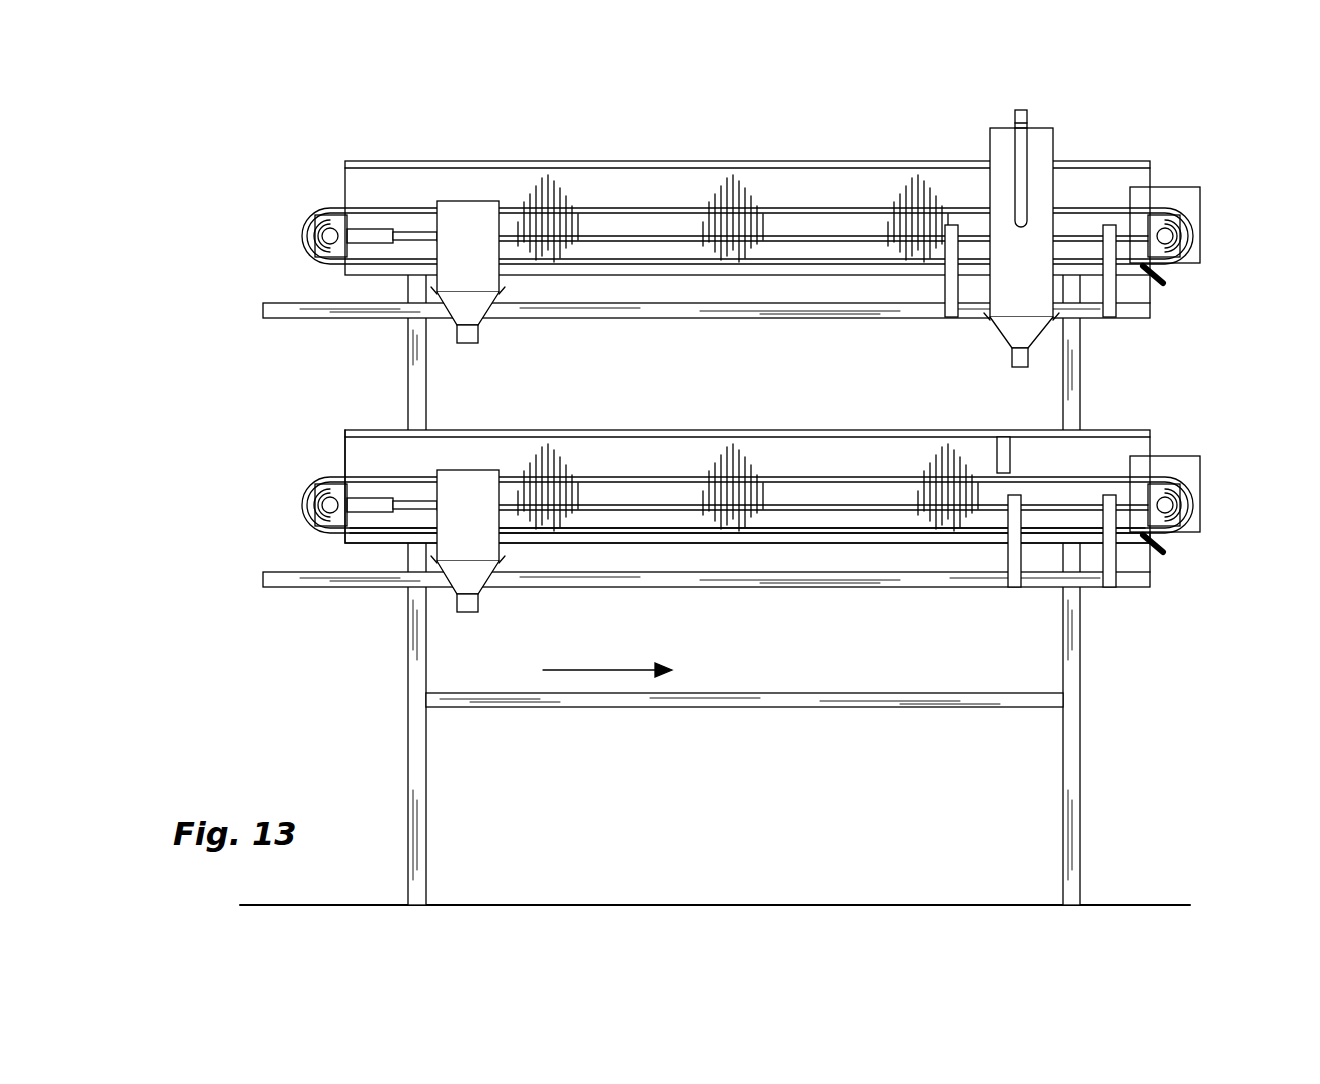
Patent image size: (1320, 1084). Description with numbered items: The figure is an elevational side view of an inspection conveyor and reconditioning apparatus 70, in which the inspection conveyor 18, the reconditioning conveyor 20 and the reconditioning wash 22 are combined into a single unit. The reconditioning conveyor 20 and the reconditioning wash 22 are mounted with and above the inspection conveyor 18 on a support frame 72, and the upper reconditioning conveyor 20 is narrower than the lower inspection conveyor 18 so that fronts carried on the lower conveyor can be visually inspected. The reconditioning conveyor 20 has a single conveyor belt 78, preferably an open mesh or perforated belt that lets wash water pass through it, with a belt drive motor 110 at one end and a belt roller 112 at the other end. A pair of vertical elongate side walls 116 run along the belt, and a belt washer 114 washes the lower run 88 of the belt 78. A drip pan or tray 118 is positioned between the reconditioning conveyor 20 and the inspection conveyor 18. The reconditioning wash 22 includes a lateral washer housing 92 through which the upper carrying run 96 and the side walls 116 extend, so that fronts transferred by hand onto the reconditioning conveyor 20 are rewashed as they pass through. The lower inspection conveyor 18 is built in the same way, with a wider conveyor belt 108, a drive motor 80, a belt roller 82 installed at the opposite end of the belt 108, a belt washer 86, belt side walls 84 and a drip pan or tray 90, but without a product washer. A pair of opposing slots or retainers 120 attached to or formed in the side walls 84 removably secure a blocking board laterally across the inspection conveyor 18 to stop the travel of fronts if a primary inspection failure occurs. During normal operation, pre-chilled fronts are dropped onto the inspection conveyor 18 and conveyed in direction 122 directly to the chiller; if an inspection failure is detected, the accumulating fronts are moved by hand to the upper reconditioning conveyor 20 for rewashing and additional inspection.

The inspection conveyor and reconditioning apparatus 70 is at (270, 221).
The support frame 72 is at (428, 805).
The vertical elongate side walls 116 is at (468, 162).
The carrying run 96 is at (547, 203).
The reconditioning conveyor 20 is at (747, 185).
The conveyor belt 78 is at (617, 207).
The reconditioning wash 22 is at (1069, 226).
The lateral washer housing 92 is at (1035, 128).
The belt drive motor 110 is at (1193, 222).
The belt roller 112 is at (315, 218).
The drip pan or tray 118 is at (315, 322).
The belt washer 114 is at (485, 323).
The belt side walls 84 is at (1127, 445).
The inspection conveyor 18 is at (378, 543).
The conveyor belt 108 is at (637, 477).
The lower run 88 is at (653, 533).
The belt roller 82 is at (305, 495).
The drive motor 80 is at (1200, 515).
The slots or retainers 120 is at (1003, 450).
The drip pan or tray 90 is at (710, 557).
The belt washer 86 is at (443, 590).
The direction 122 is at (578, 662).